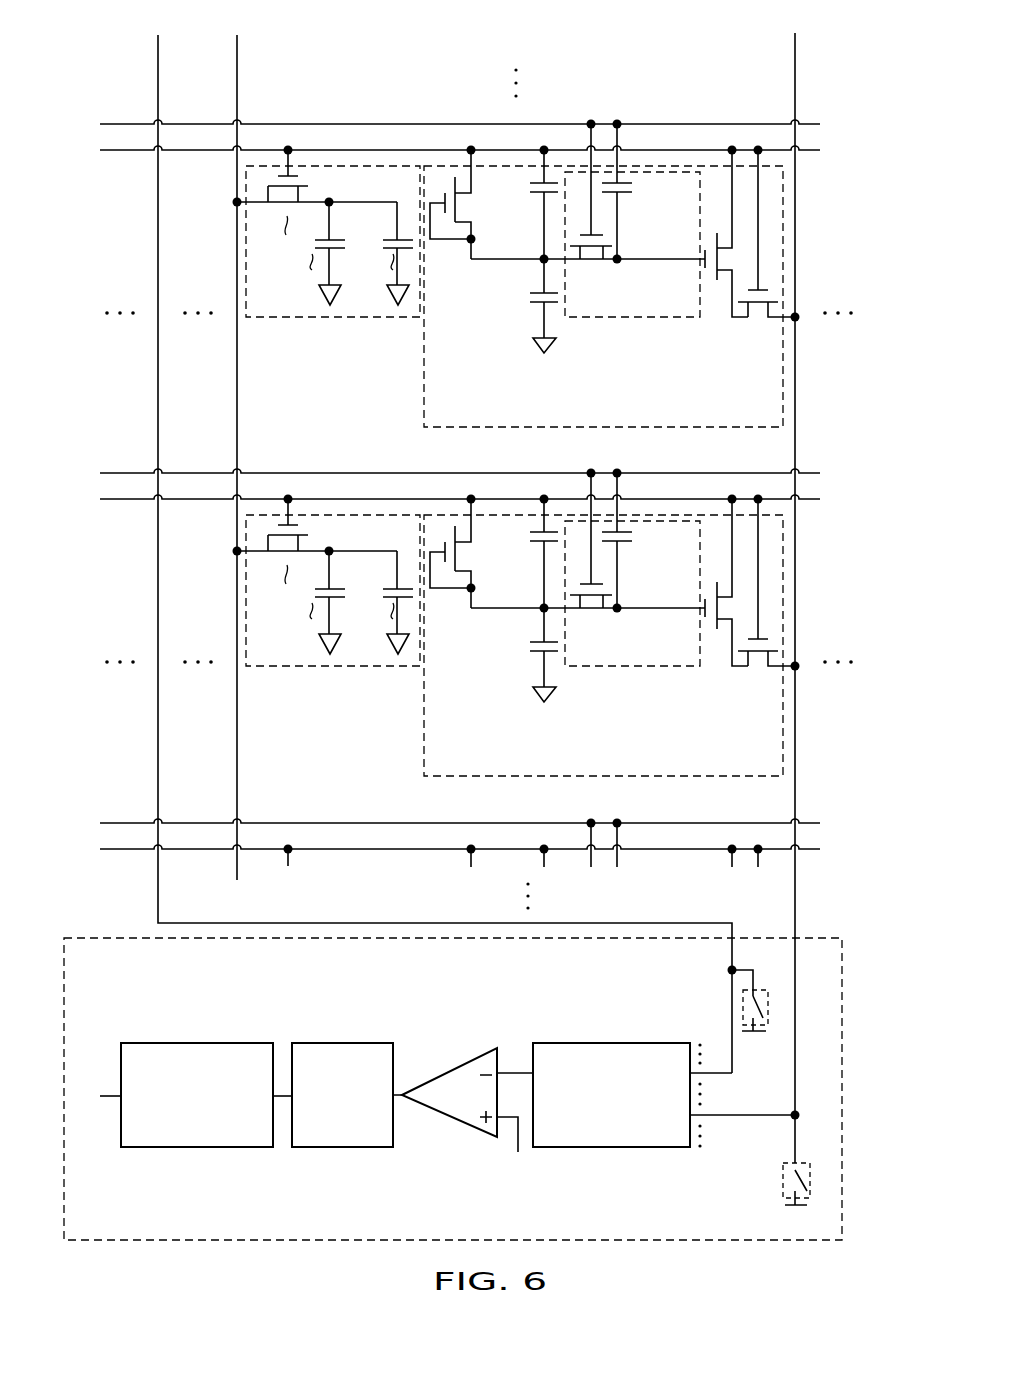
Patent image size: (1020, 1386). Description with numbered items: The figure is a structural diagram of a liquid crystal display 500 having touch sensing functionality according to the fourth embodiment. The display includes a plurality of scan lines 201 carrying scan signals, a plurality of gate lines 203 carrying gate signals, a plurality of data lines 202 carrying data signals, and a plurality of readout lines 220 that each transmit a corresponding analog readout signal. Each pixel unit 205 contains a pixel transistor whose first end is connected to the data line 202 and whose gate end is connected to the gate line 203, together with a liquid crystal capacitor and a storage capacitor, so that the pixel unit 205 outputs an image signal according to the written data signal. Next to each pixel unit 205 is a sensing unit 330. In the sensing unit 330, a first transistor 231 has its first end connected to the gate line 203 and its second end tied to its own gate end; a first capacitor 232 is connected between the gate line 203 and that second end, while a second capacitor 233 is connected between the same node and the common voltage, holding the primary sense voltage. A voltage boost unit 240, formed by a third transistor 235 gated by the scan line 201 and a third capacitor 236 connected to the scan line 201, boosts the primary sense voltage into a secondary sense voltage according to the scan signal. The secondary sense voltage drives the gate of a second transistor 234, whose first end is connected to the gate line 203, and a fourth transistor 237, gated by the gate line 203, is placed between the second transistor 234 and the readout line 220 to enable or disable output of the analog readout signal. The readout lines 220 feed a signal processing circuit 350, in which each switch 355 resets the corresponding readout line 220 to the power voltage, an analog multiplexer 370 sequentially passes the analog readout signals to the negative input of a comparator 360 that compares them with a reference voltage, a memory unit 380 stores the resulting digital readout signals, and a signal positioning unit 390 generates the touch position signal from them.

The liquid crystal display 500 is at (141, 53).
The readout line 220 is at (160, 40).
The data line 202 is at (239, 43).
The scan line 201 is at (167, 125).
The gate line 203 is at (167, 151).
The pixel unit 205 is at (327, 317).
The sensing unit 330 is at (424, 385).
The first transistor 231 is at (462, 202).
The first capacitor 232 is at (523, 190).
The second capacitor 233 is at (528, 293).
The second transistor 234 is at (722, 272).
The third transistor 235 is at (592, 263).
The third capacitor 236 is at (634, 185).
The fourth transistor 237 is at (760, 318).
The voltage boost unit 240 is at (630, 317).
The signal processing circuit 350 is at (82, 938).
The switch 355 is at (768, 990).
The comparator 360 is at (468, 1062).
The multiplexer 370 is at (602, 1147).
The memory unit 380 is at (342, 1147).
The signal positioning unit 390 is at (200, 1147).